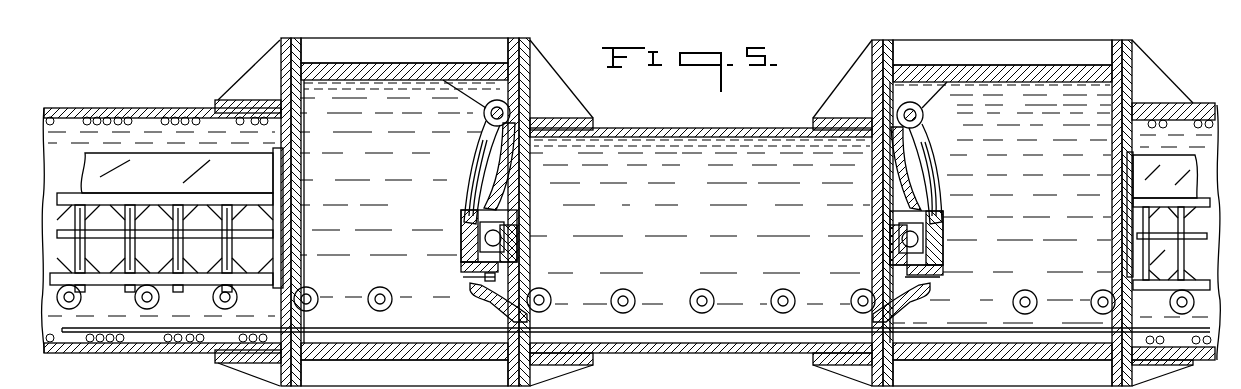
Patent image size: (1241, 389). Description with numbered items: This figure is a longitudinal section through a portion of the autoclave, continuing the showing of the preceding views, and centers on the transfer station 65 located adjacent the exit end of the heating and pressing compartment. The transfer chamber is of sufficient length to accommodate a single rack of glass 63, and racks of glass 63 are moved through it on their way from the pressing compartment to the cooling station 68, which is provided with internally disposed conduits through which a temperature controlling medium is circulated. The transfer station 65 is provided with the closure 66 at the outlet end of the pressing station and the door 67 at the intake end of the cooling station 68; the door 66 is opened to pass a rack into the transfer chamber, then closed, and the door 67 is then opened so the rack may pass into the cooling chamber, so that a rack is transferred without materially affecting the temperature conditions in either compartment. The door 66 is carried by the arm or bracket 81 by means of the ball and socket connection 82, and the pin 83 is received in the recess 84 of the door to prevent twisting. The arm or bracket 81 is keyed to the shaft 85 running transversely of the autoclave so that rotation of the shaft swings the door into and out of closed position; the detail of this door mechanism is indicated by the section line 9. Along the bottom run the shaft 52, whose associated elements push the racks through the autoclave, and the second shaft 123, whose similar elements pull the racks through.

The section line 9- 9 is at (450, 58).
The shaft 52 is at (437, 302).
The rack of glass 63 is at (108, 282).
The transfer station 65 is at (680, 120).
The closure 66 is at (504, 178).
The door 67 is at (913, 176).
The cooling station 68 is at (1205, 102).
The arm or bracket 81 is at (470, 150).
The ball and socket connection 82 is at (475, 216).
The pin 83 is at (488, 290).
The recess 84 is at (497, 283).
The shaft 85 is at (533, 82).
The second shaft 123 is at (657, 326).